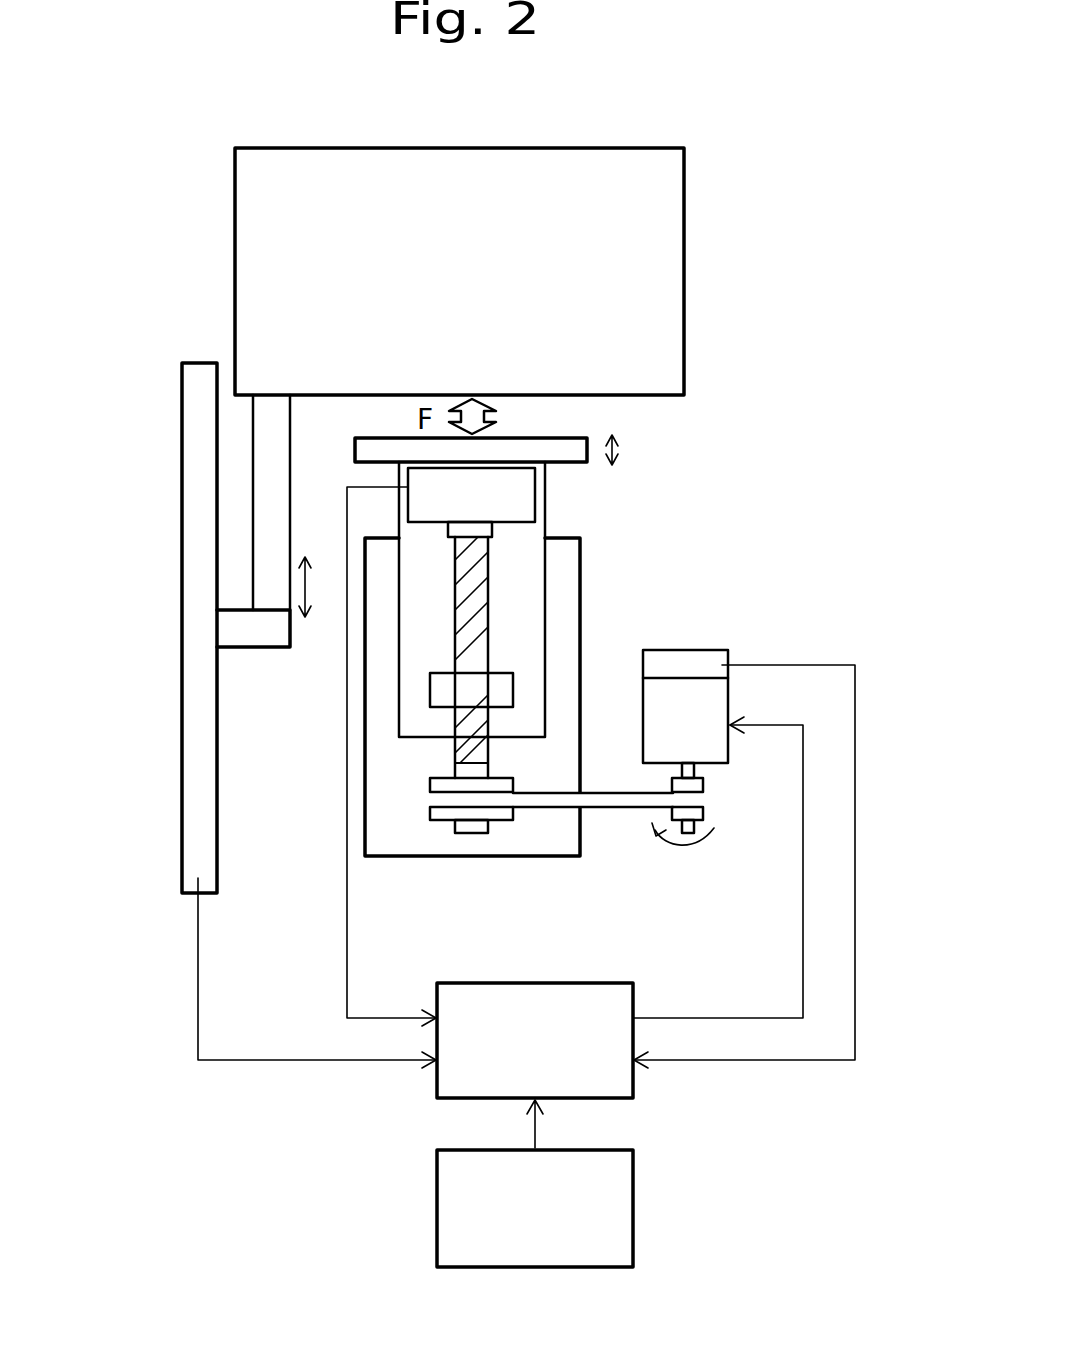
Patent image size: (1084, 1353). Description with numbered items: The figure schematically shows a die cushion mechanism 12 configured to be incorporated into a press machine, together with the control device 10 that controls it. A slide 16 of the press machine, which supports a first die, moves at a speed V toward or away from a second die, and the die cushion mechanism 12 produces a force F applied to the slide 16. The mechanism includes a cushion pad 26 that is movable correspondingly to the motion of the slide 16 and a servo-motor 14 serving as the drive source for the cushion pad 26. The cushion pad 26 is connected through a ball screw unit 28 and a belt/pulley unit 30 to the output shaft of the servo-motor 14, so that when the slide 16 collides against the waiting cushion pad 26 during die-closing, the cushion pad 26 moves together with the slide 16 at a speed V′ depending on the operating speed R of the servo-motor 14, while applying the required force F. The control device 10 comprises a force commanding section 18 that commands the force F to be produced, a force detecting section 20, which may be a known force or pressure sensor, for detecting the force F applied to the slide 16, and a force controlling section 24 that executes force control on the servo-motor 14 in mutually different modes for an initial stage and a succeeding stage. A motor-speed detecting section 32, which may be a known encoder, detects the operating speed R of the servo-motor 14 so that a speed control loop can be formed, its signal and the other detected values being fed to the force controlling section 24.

The control device 10 is at (732, 1157).
The die cushion mechanism 12 is at (692, 542).
The servo-motor 14 is at (720, 767).
The slide 16 is at (675, 208).
The force commanding section 18 is at (598, 1267).
The force detecting section 20 is at (523, 505).
The force controlling section 24 is at (192, 563).
The cushion pad 26 is at (553, 441).
The ball screw unit 28 is at (487, 592).
The belt/pulley unit 30 is at (607, 802).
The motor-speed detecting section 32 is at (695, 650).